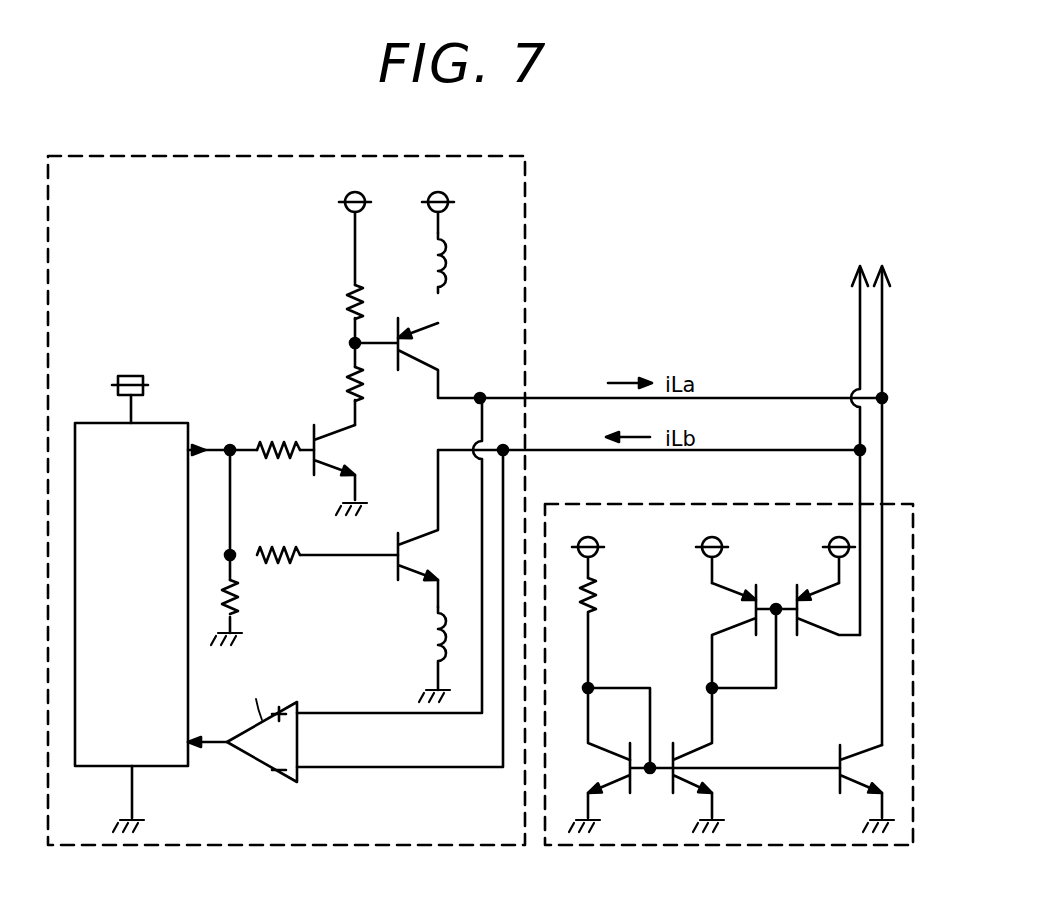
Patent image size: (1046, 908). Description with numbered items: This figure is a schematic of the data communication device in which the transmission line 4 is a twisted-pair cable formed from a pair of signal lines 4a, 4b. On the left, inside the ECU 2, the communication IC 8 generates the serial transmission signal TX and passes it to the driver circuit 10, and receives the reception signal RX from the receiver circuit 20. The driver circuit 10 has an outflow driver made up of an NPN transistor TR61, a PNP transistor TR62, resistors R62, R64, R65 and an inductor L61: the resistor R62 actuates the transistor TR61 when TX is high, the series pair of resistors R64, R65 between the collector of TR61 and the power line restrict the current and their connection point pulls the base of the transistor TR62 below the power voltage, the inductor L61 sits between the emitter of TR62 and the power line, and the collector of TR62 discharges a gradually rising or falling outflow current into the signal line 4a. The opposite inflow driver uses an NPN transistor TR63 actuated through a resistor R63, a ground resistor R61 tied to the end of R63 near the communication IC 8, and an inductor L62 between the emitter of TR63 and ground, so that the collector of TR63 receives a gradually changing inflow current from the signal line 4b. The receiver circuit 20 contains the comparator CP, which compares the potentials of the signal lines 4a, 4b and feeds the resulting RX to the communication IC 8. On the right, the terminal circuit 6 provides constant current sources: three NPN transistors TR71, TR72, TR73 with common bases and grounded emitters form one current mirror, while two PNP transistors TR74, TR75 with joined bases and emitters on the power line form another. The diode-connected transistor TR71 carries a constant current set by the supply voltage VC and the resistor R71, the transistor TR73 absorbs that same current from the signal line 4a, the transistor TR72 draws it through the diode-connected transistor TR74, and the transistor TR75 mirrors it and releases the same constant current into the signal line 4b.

The ECU 2 is at (527, 250).
The transmission line 4 is at (863, 476).
The signal line 4a is at (883, 313).
The signal line 4b is at (858, 342).
The terminal circuit 6 is at (670, 503).
The communication IC 8 is at (84, 422).
The driver circuit 10 is at (272, 331).
The receiver circuit 20 is at (253, 755).
The ground resistor R61 is at (242, 600).
The resistor R62 is at (272, 432).
The resistor R63 is at (266, 545).
The resistor R64 is at (350, 298).
The resistor R65 is at (348, 380).
The resistor R71 is at (597, 603).
The inductor L61 is at (447, 262).
The inductor L62 is at (416, 654).
The NPN transistor TR61 is at (343, 452).
The PNP transistor TR62 is at (427, 352).
The NPN transistor TR63 is at (412, 583).
The NPN transistor TR71 is at (616, 787).
The NPN transistor TR72 is at (708, 778).
The NPN transistor TR73 is at (866, 762).
The PNP transistor TR74 is at (729, 635).
The PNP transistor TR75 is at (828, 620).